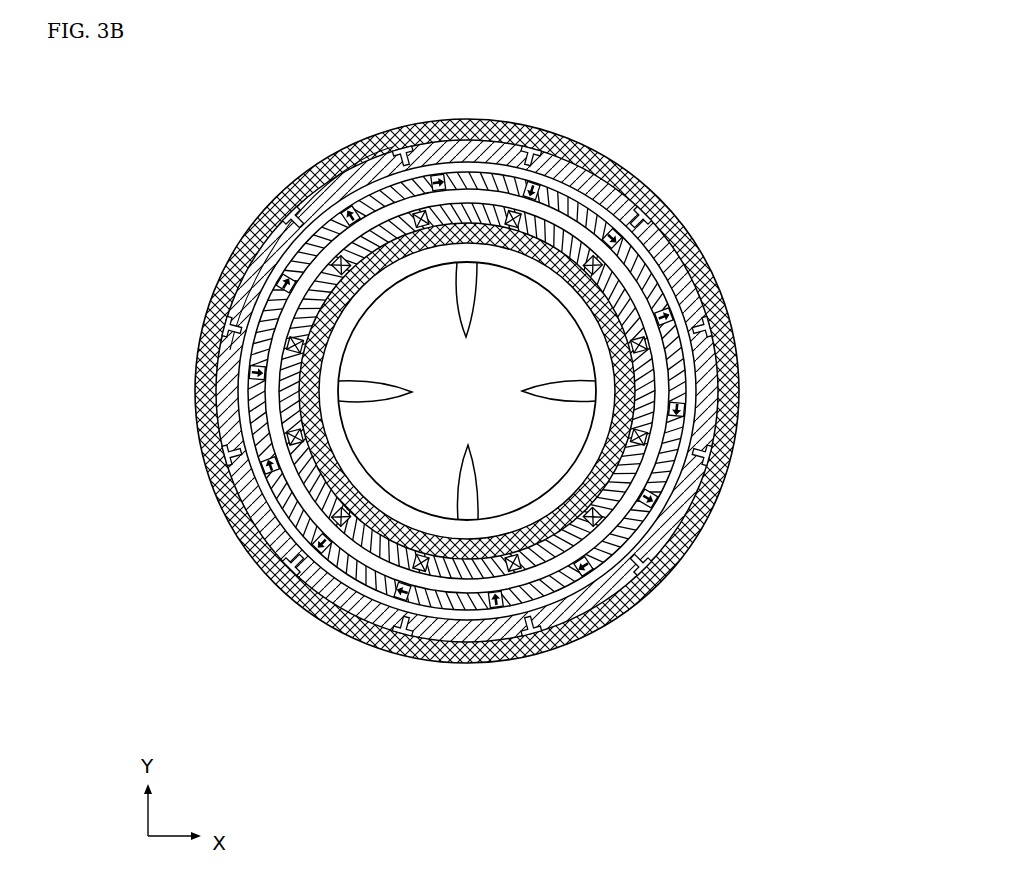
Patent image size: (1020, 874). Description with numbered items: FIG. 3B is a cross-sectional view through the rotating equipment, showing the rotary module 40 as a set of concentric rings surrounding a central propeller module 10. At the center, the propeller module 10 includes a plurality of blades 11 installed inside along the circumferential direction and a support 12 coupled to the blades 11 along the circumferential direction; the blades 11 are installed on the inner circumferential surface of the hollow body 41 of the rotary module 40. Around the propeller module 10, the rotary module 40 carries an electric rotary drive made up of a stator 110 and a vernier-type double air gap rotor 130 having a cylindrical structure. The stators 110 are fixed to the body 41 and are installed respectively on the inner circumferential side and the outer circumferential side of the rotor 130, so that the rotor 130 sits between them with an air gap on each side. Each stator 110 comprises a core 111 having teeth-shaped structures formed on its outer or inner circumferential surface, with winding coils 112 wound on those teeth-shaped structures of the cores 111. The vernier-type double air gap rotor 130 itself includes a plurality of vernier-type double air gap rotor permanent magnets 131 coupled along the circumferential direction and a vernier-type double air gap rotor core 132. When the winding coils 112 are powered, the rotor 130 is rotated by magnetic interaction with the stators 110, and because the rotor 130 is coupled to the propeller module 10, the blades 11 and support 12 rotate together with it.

The rotary module 40 is at (654, 176).
The body 41 is at (617, 323).
The stator 110 is at (537, 391).
The core 111 is at (717, 338).
The winding coil 112 is at (703, 322).
The vernier-type double air gap rotor 130 is at (549, 391).
The vernier-type double air gap rotor permanent magnet 131 is at (684, 408).
The vernier-type double air gap rotor core 132 is at (680, 376).
The propeller module 10 is at (495, 523).
The blade 11 is at (533, 513).
The support 12 is at (572, 396).